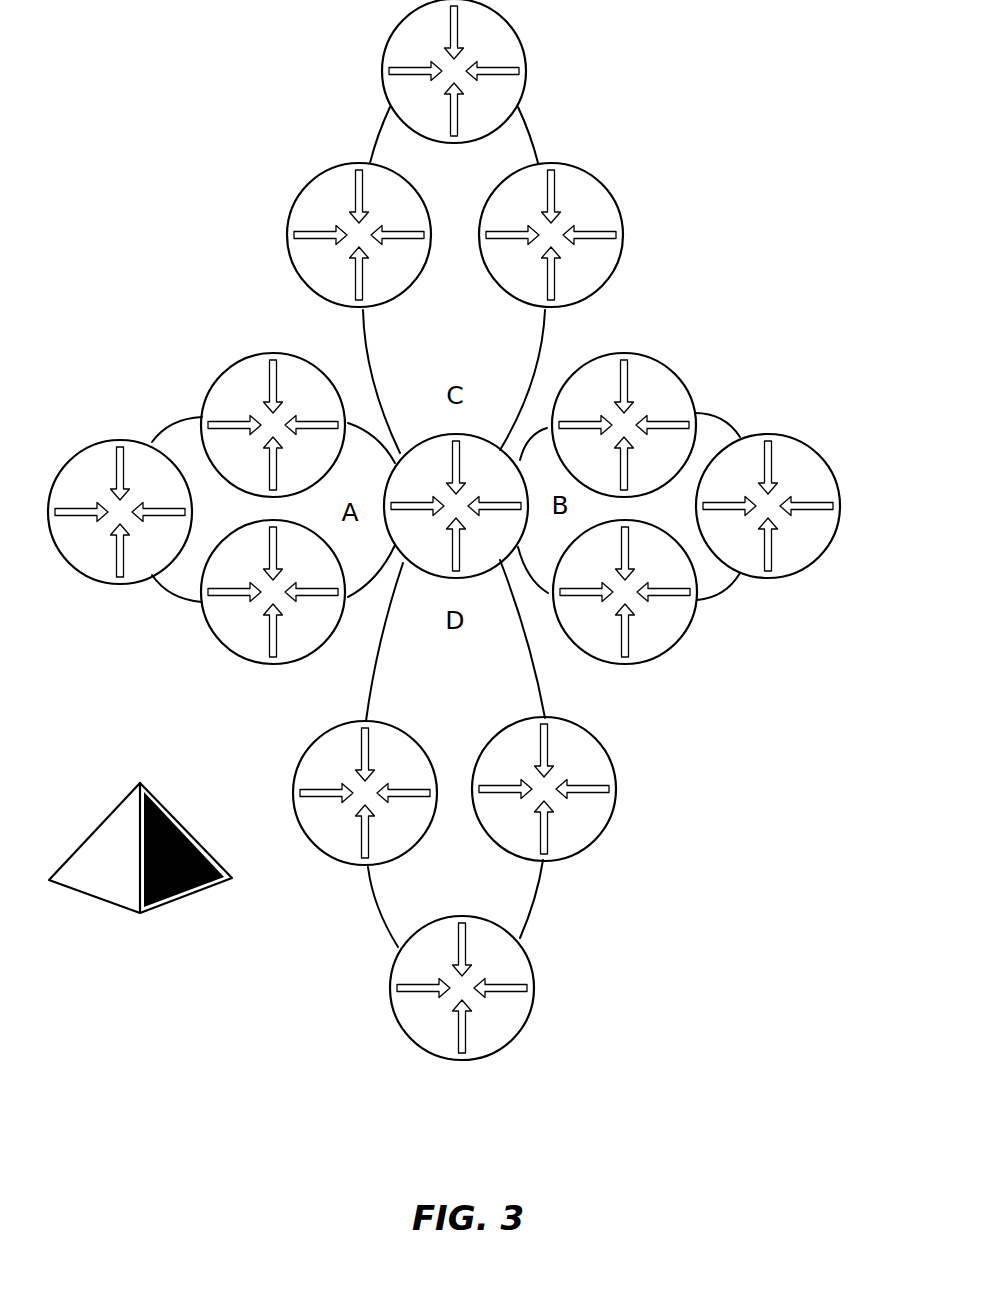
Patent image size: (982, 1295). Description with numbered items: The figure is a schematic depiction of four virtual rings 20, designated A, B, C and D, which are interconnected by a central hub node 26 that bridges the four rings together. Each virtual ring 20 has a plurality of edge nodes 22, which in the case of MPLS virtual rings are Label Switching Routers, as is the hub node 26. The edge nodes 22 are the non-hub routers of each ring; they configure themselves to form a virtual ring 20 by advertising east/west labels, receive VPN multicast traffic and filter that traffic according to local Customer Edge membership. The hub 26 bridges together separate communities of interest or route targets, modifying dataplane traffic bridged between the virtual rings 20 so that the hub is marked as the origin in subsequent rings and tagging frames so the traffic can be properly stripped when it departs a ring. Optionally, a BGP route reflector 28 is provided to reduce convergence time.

The virtual ring 20 is at (532, 132).
The edge node 22 is at (615, 200).
The hub node 26 is at (407, 558).
The BGP route reflector 28 is at (183, 900).